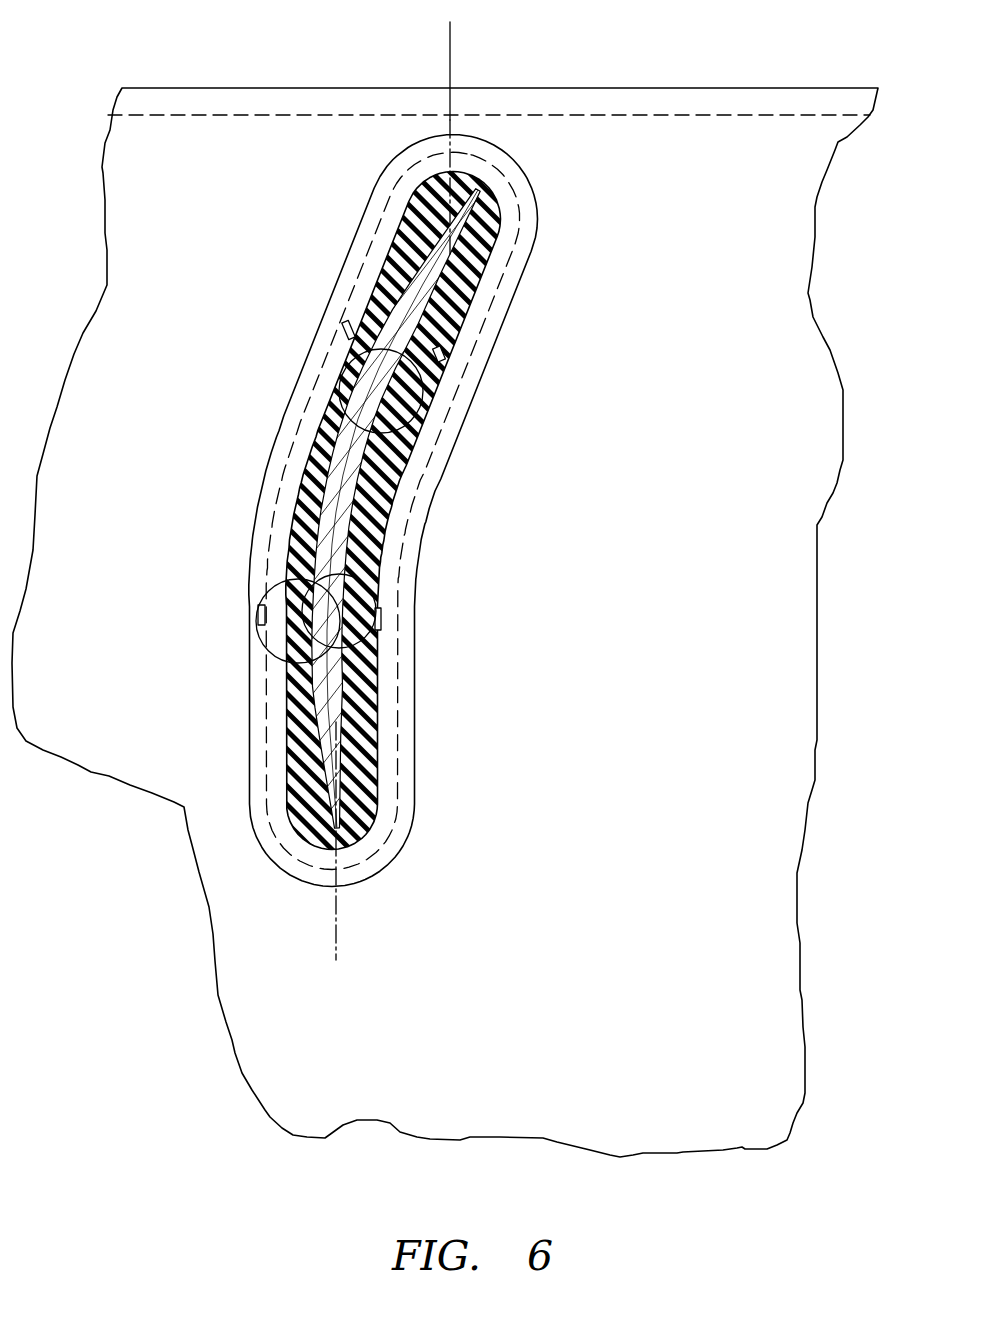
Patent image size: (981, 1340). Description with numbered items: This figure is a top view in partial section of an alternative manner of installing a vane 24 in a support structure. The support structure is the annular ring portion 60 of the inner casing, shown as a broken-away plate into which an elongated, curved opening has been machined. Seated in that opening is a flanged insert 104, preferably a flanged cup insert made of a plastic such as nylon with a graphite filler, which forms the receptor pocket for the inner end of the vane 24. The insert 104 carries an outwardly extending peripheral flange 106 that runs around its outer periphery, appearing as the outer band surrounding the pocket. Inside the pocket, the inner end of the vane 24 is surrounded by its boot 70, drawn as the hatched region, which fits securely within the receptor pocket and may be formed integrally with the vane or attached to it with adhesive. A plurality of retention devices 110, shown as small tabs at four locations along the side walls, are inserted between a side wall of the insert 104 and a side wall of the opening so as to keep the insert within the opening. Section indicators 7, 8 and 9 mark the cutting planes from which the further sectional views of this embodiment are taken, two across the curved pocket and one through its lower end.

The annular ring portion 60 is at (180, 216).
The vane 24 is at (425, 294).
The boot 70 is at (506, 223).
The retention devices 110 is at (347, 330).
The peripheral flange 106 is at (300, 391).
The flanged insert 104 is at (468, 337).
The section line 7 is at (262, 481).
The section line 8 is at (450, 22).
The section line 9 is at (336, 722).